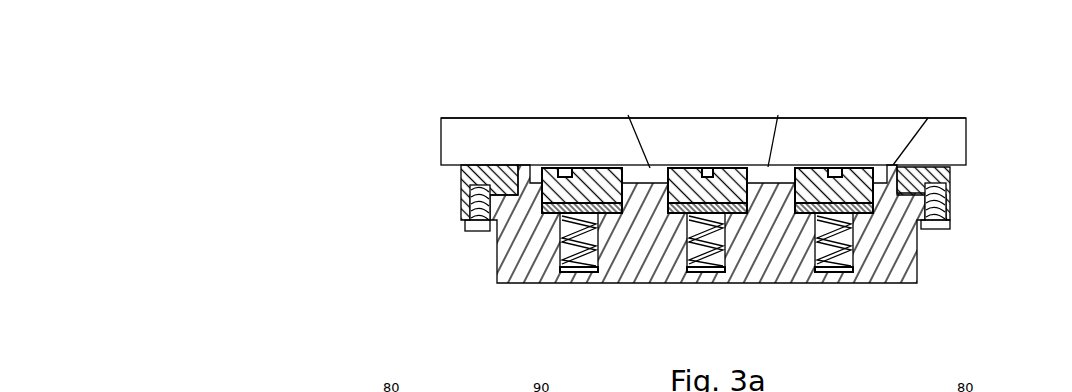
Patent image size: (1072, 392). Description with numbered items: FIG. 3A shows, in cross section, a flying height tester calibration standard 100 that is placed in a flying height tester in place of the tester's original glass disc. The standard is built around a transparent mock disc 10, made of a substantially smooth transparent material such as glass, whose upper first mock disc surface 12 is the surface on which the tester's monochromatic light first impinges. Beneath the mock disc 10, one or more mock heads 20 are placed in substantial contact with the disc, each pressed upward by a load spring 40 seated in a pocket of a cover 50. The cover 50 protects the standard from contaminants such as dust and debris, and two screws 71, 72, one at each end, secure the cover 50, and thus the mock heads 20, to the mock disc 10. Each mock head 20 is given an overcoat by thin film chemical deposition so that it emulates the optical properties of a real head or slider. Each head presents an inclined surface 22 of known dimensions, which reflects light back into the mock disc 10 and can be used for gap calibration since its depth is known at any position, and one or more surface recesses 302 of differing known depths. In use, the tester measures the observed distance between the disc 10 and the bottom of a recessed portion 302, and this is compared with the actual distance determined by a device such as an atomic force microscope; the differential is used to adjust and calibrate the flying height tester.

The calibration standard 100 is at (700, 195).
The mock disc 10 is at (500, 147).
The first mock disc surface 12 is at (868, 118).
The mock head 20 is at (588, 186).
The inclined surface 22 is at (598, 165).
The surface recess 302 is at (565, 165).
The load spring 40 is at (837, 270).
The cover 50 is at (903, 255).
The screw 71 is at (935, 223).
The screw 72 is at (480, 223).